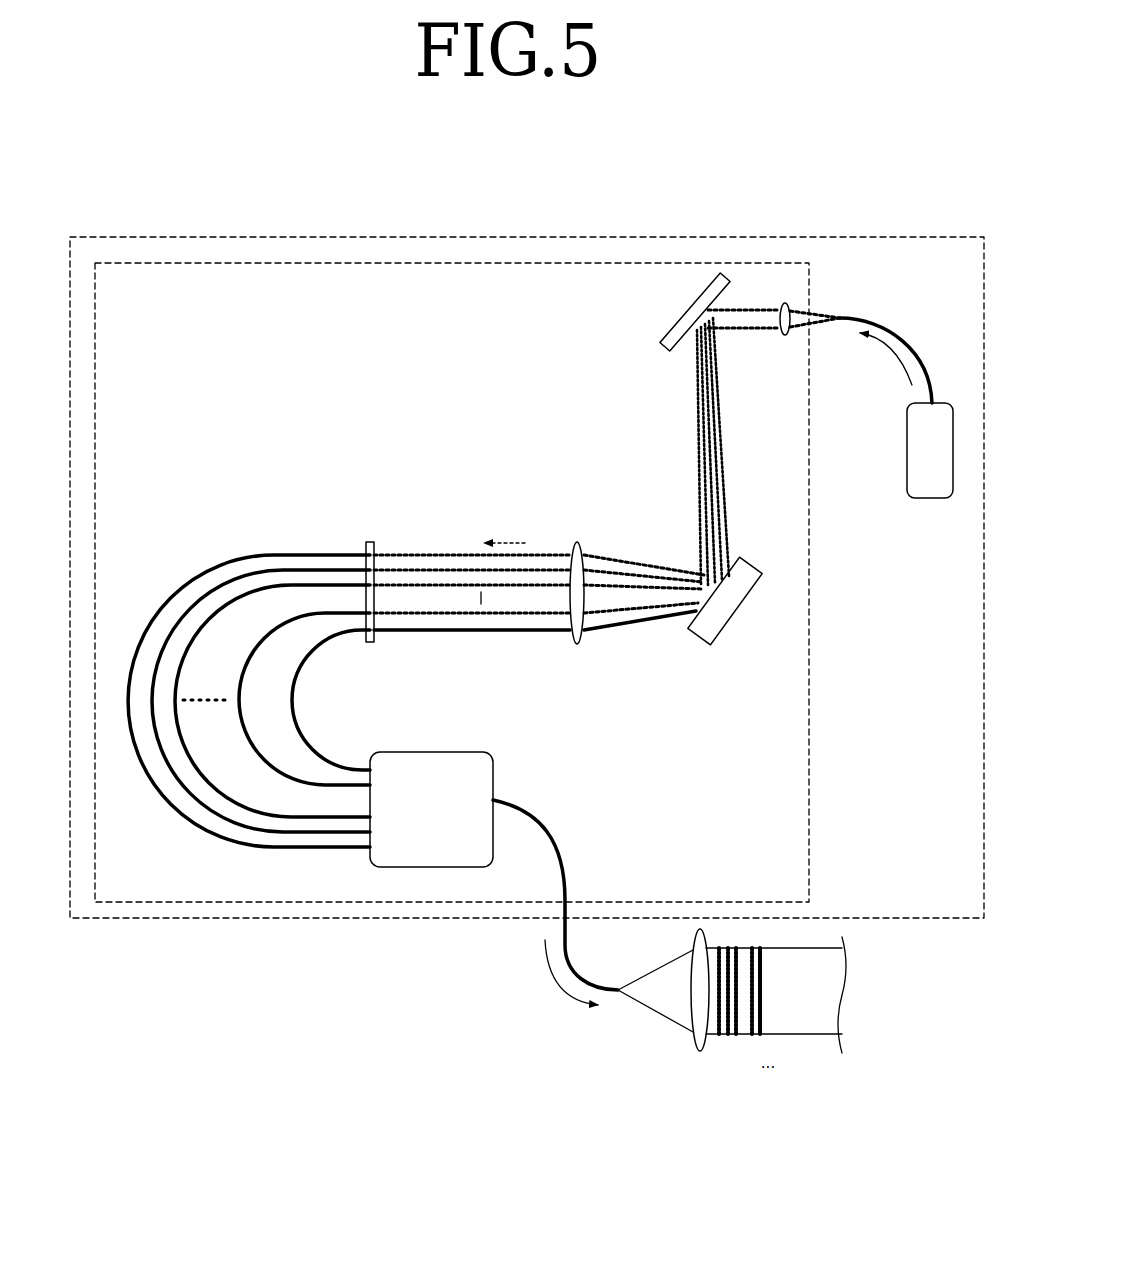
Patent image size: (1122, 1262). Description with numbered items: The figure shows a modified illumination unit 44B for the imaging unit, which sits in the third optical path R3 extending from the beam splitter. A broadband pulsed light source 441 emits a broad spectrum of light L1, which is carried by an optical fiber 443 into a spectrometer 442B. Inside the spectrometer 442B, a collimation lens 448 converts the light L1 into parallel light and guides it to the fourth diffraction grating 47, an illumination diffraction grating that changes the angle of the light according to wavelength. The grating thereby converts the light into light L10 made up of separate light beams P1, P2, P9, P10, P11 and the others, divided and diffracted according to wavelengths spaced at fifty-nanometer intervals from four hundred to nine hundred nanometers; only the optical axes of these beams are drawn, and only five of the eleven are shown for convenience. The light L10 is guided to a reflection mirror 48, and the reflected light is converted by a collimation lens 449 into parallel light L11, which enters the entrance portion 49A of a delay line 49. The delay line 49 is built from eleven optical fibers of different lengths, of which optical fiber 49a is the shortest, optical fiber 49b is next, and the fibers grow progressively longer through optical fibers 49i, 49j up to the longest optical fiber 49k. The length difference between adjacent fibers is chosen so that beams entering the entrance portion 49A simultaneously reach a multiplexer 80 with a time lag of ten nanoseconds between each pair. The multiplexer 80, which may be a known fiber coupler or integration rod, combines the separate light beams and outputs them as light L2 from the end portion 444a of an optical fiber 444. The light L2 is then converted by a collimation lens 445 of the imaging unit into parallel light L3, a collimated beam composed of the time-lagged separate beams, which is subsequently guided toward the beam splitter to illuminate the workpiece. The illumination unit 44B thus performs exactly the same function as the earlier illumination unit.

The illumination unit 44B is at (858, 234).
The spectrometer 442B is at (810, 650).
The broadband pulsed light source 441 is at (930, 490).
The optical fiber 443 is at (897, 328).
The collimation lens 448 is at (790, 306).
The fourth diffraction grating 47 is at (667, 336).
The reflection mirror 48 is at (713, 631).
The collimation lens 449 is at (580, 643).
The delay line 49 is at (260, 662).
The entrance portion 49A is at (366, 545).
The optical fiber 49a is at (306, 658).
The optical fiber 49b is at (242, 700).
The optical fiber 49i is at (297, 584).
The optical fiber 49j is at (235, 582).
The optical fiber 49k is at (160, 612).
The multiplexer 80 is at (465, 765).
The optical fiber 444 is at (557, 925).
The end portion 444a is at (617, 988).
The collimation lens 445 is at (698, 1041).
The light L1 is at (895, 356).
The light L2 is at (556, 982).
The parallel light L3 is at (819, 945).
The light L10 is at (689, 449).
The parallel light L11 is at (549, 550).
The separate light beam P1 is at (510, 632).
The separate light beam P2 is at (448, 615).
The separate light beam P9 is at (462, 583).
The separate light beam P10 is at (432, 568).
The separate light beam P11 is at (394, 553).
The third optical path R3 is at (687, 1056).